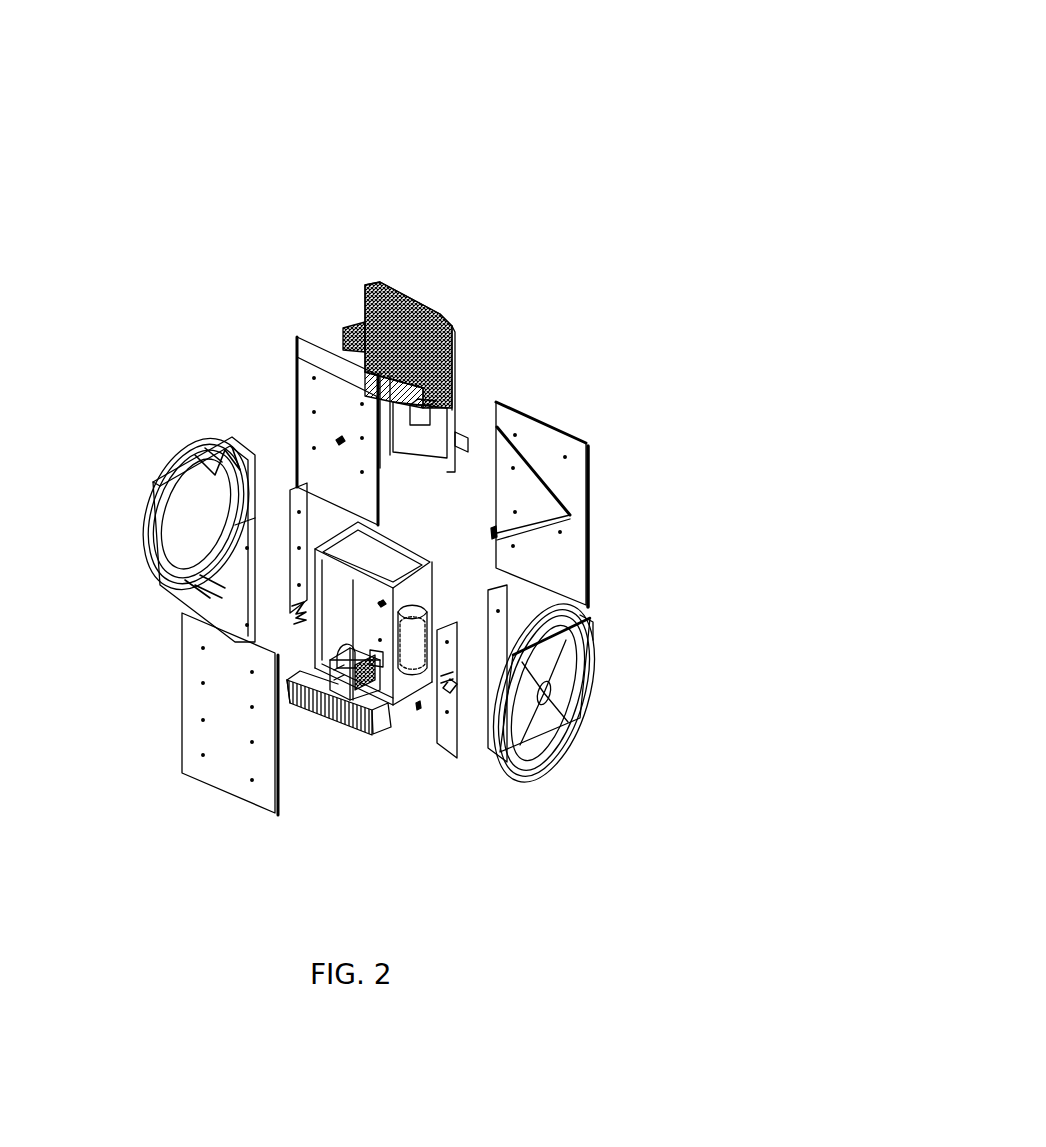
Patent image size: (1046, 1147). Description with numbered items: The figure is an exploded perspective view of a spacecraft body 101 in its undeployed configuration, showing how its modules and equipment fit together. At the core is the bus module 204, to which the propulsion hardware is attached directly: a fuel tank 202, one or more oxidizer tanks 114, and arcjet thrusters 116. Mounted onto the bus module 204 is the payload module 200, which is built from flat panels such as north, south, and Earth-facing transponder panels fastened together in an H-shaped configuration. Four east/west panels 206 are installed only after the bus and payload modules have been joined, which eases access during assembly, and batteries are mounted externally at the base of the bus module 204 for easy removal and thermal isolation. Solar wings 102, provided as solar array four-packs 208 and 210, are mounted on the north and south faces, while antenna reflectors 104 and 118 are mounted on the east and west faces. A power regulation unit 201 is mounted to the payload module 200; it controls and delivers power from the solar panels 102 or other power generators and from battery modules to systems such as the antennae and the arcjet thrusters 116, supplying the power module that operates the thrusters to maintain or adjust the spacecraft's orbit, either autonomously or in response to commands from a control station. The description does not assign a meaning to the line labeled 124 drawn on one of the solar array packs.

The spacecraft body 101 is at (654, 121).
The solar wings 102 is at (569, 477).
The antenna reflector 104 is at (580, 678).
The oxidizer tank 114 is at (419, 627).
The arcjet thruster 116 is at (283, 614).
The antenna reflector 118 is at (190, 469).
The guide rail 124 is at (535, 503).
The payload module 200 is at (458, 339).
The power regulation unit 201 is at (463, 440).
The fuel tank 202 is at (370, 565).
The bus module 204 is at (354, 705).
The east/west panels 206 is at (452, 735).
The solar array 4-pack 208 is at (545, 414).
The solar array 4-pack 210 is at (222, 704).